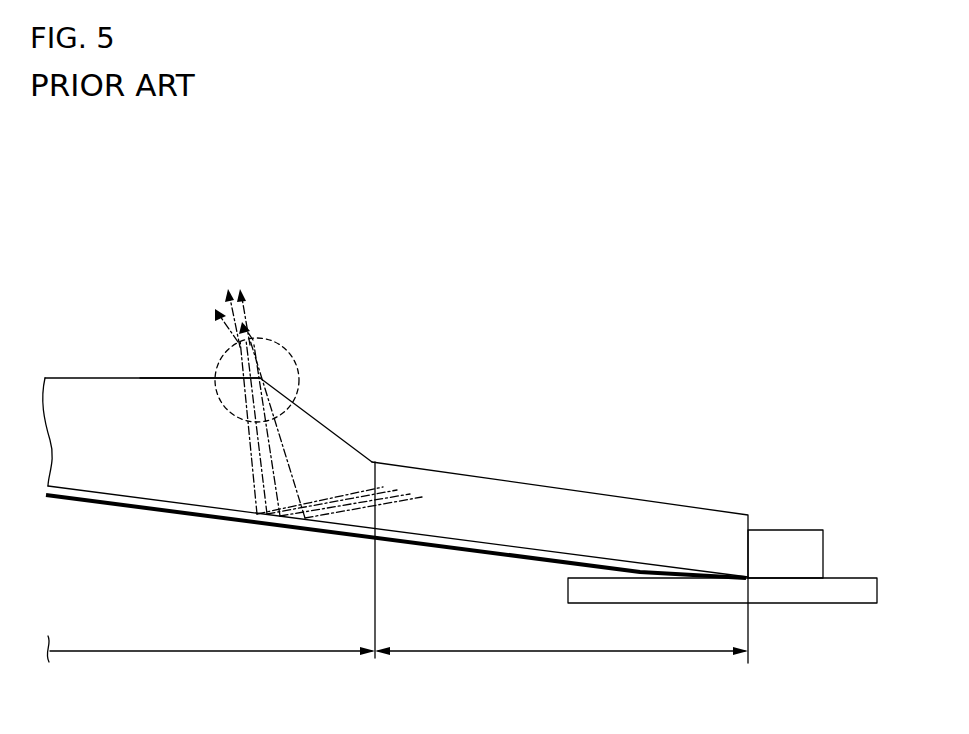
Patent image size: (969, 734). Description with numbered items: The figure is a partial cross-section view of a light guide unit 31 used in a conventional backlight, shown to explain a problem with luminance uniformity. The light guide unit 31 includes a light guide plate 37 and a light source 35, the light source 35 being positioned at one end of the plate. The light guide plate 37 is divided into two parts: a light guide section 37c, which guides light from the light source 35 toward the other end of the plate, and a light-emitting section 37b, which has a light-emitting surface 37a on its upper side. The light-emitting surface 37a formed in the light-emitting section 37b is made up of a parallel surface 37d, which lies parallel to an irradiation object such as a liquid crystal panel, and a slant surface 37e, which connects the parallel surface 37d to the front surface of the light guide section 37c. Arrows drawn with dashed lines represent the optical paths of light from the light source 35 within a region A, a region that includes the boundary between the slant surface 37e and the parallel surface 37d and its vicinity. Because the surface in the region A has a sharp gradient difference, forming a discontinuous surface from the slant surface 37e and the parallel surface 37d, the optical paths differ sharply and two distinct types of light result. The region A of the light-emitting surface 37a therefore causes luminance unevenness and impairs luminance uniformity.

The light guide unit 31 is at (670, 228).
The light source 35 is at (783, 537).
The light guide plate 37 is at (615, 505).
The light-emitting surface 37a is at (370, 211).
The light-emitting section 37b is at (211, 657).
The light guide section 37c is at (561, 663).
The parallel surface 37d is at (180, 377).
The slant surface 37e is at (318, 420).
The region A is at (285, 345).